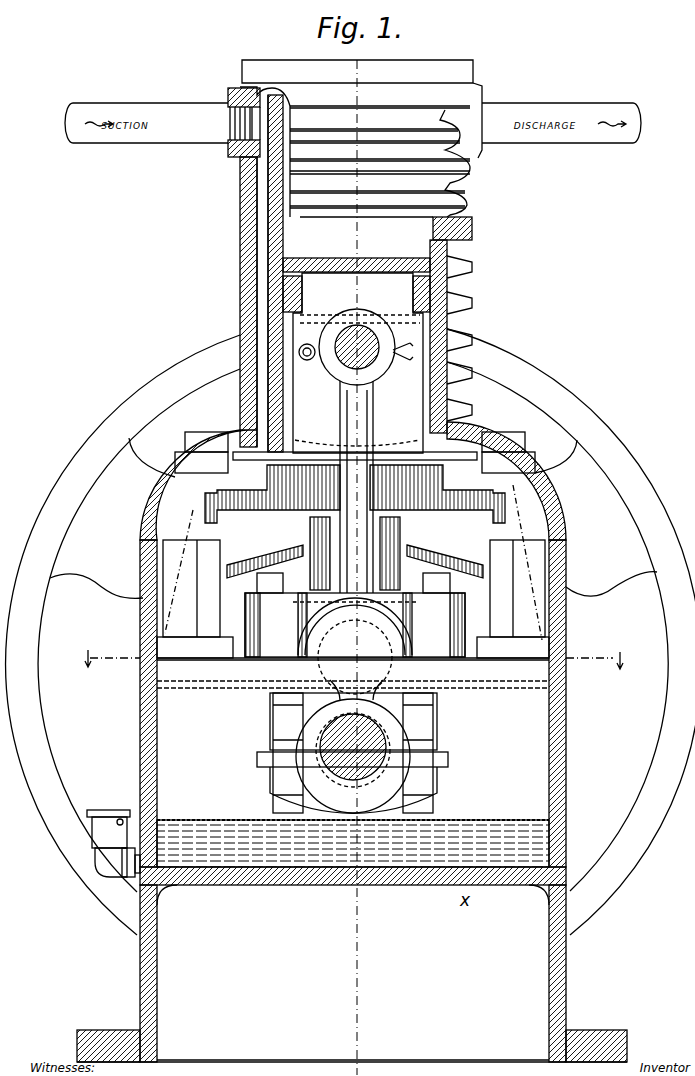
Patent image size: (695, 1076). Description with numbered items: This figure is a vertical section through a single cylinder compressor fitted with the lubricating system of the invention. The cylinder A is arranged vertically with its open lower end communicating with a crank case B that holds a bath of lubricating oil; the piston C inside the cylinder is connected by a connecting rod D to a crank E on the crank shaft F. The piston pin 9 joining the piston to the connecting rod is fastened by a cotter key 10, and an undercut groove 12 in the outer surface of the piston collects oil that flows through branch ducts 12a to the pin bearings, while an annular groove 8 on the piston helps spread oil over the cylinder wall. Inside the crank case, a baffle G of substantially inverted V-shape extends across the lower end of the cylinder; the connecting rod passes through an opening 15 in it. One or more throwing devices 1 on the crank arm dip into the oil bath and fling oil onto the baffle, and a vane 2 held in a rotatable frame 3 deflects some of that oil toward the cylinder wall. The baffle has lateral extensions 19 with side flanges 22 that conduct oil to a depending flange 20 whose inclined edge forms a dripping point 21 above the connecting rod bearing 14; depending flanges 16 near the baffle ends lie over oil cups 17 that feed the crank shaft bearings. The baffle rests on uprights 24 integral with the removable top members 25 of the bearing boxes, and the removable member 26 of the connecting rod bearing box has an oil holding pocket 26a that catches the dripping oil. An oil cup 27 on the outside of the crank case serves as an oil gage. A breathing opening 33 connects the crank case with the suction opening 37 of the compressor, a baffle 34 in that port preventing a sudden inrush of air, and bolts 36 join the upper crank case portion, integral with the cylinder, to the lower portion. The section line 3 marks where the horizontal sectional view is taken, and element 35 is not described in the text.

The throwing device 1 is at (343, 817).
The vane 2 is at (362, 92).
The frame 3 is at (348, 660).
The annular groove 8 is at (267, 430).
The piston pin 9 is at (372, 362).
The cotter key 10 is at (307, 361).
The groove 12 is at (356, 363).
The branch ducts 12a is at (357, 336).
The connecting rod bearing 14 is at (300, 745).
The opening 15 is at (385, 448).
The depending flanges 16 is at (415, 500).
The oil cups 17 is at (250, 605).
The extensions 19 is at (190, 456).
The depending flange 20 is at (198, 508).
The dripping point 21 is at (354, 562).
The side flanges 22 is at (268, 505).
The uprights 24 is at (465, 553).
The removable top members 25 is at (460, 616).
The removable member 26 is at (275, 782).
The oil holding pocket 26a is at (437, 760).
The oil cup 27 is at (100, 833).
The opening 33 is at (262, 308).
The baffle 34 is at (262, 130).
The inclined brace 35 is at (270, 567).
The bolts 36 is at (165, 627).
The suction opening 37 is at (233, 95).
The cylinder A is at (450, 232).
The crank case B is at (566, 563).
The piston C is at (283, 260).
The connecting rod D is at (357, 418).
The crank E is at (410, 730).
The crank shaft F is at (318, 672).
The baffle G is at (523, 488).